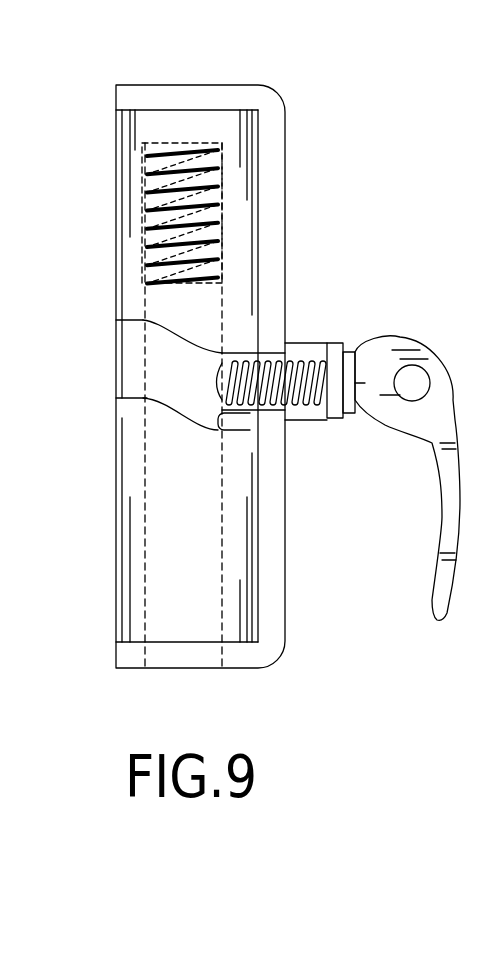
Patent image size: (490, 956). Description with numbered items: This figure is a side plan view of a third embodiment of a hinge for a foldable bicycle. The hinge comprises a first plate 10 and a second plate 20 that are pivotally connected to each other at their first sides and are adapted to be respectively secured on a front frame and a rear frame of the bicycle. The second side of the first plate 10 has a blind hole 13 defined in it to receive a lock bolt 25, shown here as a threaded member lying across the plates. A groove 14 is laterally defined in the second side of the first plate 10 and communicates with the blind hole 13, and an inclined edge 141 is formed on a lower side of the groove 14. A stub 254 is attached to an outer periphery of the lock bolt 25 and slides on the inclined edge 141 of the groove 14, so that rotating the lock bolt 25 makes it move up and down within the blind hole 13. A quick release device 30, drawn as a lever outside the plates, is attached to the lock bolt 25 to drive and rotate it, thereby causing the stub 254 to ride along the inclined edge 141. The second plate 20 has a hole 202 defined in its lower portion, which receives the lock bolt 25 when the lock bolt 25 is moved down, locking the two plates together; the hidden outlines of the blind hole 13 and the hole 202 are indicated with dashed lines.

The first plate 10 is at (127, 142).
The second plate 20 is at (272, 220).
The lock bolt 25 is at (153, 332).
The groove 14 is at (127, 358).
The inclined edge 141 is at (147, 395).
The stub 254 is at (240, 422).
The quick release device 30 is at (338, 337).
The blind hole 13 is at (223, 565).
The hole 202 is at (145, 648).